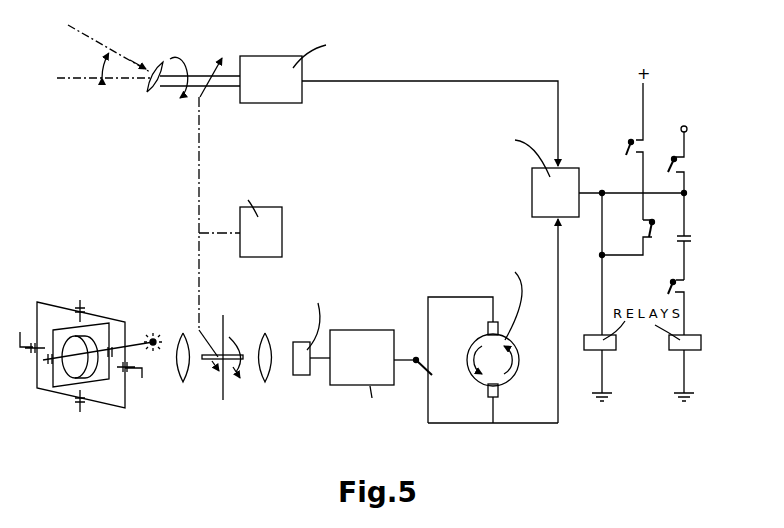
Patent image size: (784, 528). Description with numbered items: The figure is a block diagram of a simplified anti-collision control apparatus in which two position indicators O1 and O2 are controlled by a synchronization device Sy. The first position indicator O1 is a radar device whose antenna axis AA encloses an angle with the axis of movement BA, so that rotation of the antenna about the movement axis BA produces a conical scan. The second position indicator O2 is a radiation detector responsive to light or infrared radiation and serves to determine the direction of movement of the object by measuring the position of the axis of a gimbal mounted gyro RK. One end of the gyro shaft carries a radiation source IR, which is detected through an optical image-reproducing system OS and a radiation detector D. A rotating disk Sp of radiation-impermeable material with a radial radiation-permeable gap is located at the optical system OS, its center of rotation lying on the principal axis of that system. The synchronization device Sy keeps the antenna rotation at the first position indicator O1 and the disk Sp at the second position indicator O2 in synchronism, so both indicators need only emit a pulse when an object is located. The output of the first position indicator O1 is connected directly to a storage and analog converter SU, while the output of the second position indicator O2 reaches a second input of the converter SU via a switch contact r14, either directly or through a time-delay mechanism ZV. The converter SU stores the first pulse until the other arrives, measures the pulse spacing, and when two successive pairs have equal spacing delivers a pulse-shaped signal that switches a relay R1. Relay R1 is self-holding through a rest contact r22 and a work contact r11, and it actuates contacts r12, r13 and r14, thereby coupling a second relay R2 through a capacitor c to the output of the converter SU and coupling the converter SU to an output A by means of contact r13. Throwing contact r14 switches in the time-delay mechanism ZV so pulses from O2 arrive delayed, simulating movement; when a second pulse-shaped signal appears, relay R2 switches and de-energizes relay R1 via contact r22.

The antenna axis AA is at (88, 44).
The axis of movement BA is at (88, 79).
The first position indicator O1 is at (272, 63).
The synchronization device Sy is at (278, 249).
The storage and analog converter SU is at (484, 160).
The work contact r11 is at (621, 151).
The rest contact r22 is at (624, 238).
The contact r13 is at (691, 184).
The contact r12 is at (691, 306).
The switch contact r14 is at (419, 359).
The capacitor c is at (690, 256).
The output A is at (683, 120).
The relay R1 is at (611, 368).
The second relay R2 is at (696, 368).
The second position indicator O2 is at (364, 337).
The time-delay mechanism ZV is at (477, 333).
The radiation source IR is at (150, 336).
The optical image-reproducing system OS is at (186, 337).
The rotating disk Sp is at (222, 386).
The radiation detector D is at (308, 343).
The gimbal mounted gyro RK is at (73, 362).